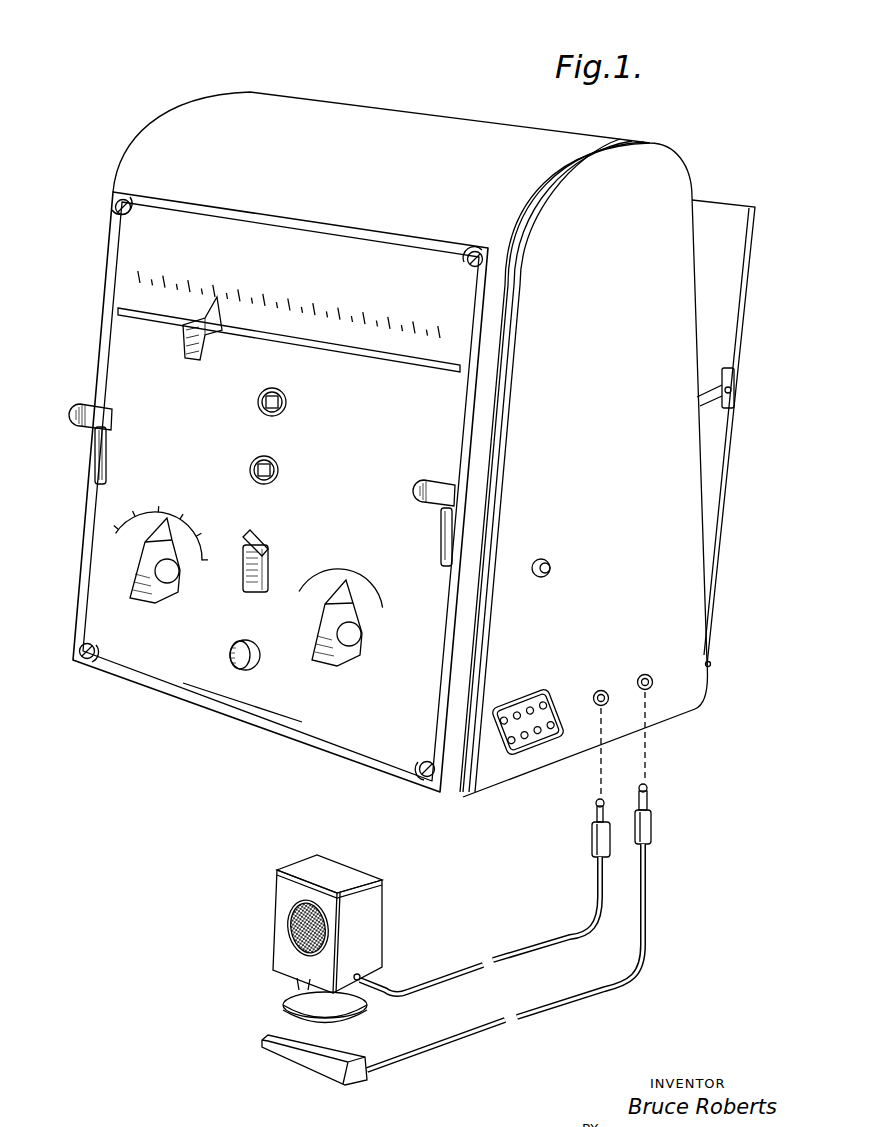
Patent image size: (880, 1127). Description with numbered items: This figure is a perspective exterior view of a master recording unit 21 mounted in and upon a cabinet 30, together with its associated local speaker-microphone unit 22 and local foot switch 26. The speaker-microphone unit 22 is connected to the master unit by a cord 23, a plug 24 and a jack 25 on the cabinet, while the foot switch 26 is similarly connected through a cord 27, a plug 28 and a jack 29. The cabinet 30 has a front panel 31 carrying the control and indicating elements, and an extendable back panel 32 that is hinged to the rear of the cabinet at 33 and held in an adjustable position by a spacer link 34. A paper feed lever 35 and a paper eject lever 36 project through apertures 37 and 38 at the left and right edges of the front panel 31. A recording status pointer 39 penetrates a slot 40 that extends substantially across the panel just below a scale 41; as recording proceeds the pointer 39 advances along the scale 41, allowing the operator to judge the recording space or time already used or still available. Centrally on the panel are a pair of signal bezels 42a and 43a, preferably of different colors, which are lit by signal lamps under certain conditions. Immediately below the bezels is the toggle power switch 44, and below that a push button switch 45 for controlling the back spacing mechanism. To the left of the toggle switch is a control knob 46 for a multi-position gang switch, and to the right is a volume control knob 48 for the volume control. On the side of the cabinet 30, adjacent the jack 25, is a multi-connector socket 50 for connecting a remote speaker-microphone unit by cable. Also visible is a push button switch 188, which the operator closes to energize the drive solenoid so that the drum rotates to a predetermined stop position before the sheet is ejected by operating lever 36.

The master unit 21 is at (238, 727).
The local speaker-microphone unit 22 is at (276, 953).
The cord 23 is at (525, 944).
The plug 24 is at (592, 838).
The jack 25 is at (597, 704).
The local foot switch 26 is at (356, 1085).
The cord 27 is at (565, 994).
The plug 28 is at (650, 823).
The jack 29 is at (654, 682).
The cabinet 30 is at (143, 143).
The front panel 31 is at (113, 337).
The extendable back panel 32 is at (738, 272).
The hinge 33 is at (711, 665).
The spacer link 34 is at (733, 398).
The paper feed lever 35 is at (80, 405).
The paper eject lever 36 is at (438, 491).
The aperture 37 is at (100, 455).
The aperture 38 is at (450, 543).
The recording status pointer 39 is at (214, 310).
The slot 40 is at (367, 357).
The scale 41 is at (381, 328).
The signal bezel 42a is at (258, 400).
The signal bezel 43a is at (280, 470).
The power switch 44 is at (243, 574).
The push button switch 45 is at (231, 656).
The control knob 46 is at (142, 574).
The volume control knob 48 is at (352, 645).
The multi-connector socket 50 is at (500, 730).
The push button switch 188 is at (542, 578).